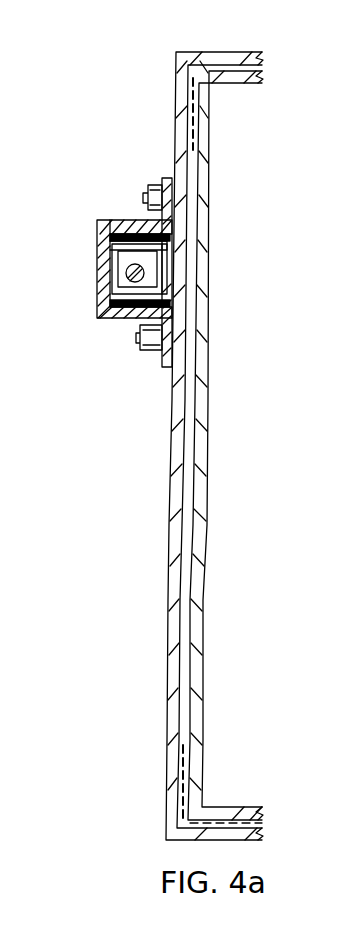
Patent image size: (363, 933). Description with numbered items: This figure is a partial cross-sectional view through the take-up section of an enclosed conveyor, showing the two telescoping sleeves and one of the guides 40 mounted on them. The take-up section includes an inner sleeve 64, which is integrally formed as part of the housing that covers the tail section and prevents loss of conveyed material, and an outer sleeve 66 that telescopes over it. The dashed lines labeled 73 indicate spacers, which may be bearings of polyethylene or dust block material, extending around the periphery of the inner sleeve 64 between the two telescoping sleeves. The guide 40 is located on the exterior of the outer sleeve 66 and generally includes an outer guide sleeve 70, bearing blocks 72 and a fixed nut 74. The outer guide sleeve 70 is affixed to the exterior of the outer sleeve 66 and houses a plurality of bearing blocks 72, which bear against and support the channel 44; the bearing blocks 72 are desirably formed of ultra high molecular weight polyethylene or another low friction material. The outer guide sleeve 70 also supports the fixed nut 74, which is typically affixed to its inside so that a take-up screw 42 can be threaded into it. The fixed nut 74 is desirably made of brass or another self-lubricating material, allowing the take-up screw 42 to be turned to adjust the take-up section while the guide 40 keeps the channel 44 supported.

The guides 40 is at (127, 157).
The take-up screw 42 is at (135, 284).
The channel 44 is at (168, 273).
The inner sleeve 64 is at (208, 505).
The outer sleeve 66 is at (168, 590).
The outer guide sleeve 70 is at (95, 272).
The bearing blocks 72 is at (97, 237).
The spacers 73 is at (204, 742).
The fixed nut 74 is at (130, 250).